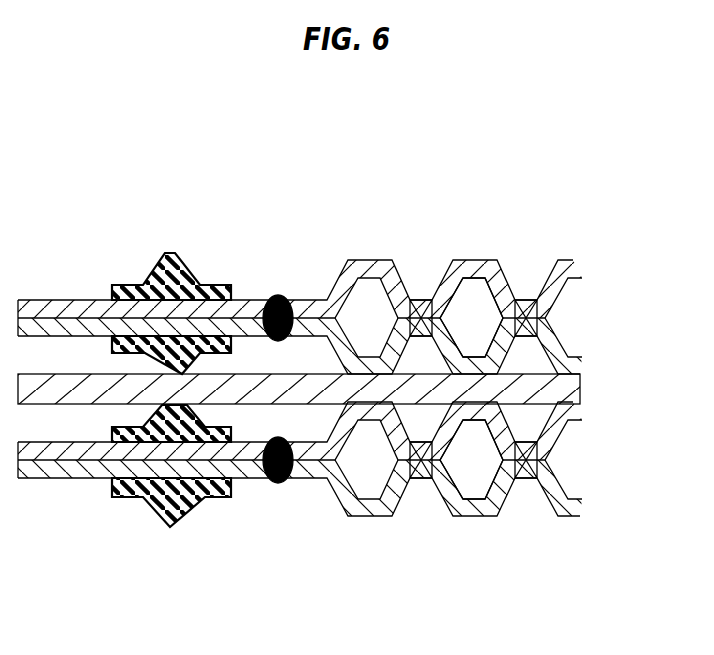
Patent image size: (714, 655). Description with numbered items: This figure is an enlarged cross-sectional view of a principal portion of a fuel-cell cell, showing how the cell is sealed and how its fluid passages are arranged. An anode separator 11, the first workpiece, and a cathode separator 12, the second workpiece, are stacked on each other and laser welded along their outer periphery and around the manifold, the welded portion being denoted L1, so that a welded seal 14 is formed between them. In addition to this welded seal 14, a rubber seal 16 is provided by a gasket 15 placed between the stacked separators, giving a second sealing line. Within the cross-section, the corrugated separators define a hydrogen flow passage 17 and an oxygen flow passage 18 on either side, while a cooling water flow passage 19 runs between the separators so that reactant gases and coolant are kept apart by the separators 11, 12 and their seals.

The anode separator 11 is at (575, 268).
The cathode separator 12 is at (577, 362).
The welded seal 14 is at (279, 296).
The gasket 15 is at (170, 336).
The rubber seal 16 is at (168, 254).
The hydrogen flow passage 17 is at (422, 348).
The oxygen flow passage 18 is at (422, 420).
The cooling water flow passage 19 is at (478, 305).